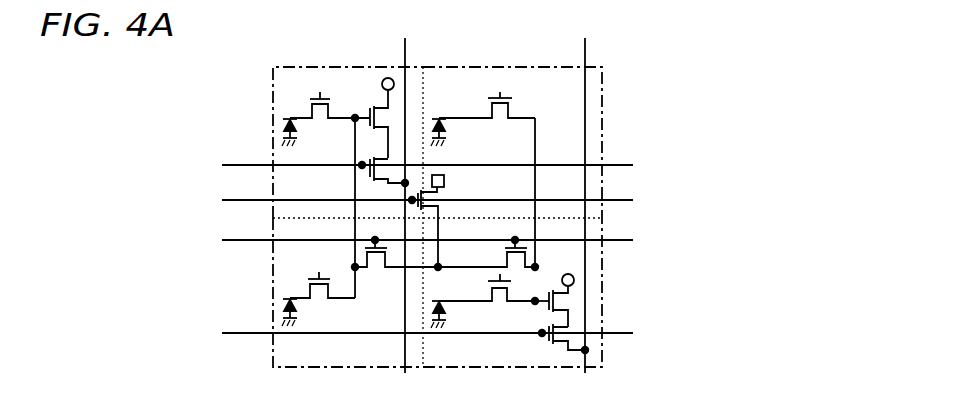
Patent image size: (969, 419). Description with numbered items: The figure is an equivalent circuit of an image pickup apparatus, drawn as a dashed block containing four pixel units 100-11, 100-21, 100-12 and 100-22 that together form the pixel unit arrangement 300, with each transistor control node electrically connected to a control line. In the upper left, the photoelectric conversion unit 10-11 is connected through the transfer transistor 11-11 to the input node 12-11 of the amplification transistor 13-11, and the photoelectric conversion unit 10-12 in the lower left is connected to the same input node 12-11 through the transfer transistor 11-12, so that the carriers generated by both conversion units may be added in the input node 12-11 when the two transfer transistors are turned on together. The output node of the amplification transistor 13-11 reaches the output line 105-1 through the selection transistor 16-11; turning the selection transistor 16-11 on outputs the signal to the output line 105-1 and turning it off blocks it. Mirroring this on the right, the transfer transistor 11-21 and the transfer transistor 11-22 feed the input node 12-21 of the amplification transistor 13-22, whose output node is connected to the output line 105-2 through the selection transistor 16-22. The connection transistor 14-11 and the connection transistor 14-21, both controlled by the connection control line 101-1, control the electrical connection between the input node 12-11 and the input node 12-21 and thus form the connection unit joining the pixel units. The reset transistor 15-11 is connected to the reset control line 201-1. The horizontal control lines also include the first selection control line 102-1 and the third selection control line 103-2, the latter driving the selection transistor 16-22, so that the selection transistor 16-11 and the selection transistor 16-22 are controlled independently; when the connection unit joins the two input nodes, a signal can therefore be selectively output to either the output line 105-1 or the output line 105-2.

The pixel unit 300 is at (205, 71).
The pixel unit 100-11 is at (312, 67).
The pixel unit 100-21 is at (512, 42).
The pixel unit 100-12 is at (330, 367).
The pixel unit 100-22 is at (457, 367).
The output line 105-1 is at (402, 195).
The output line 105-2 is at (578, 195).
The first selection control line 102-1 is at (365, 165).
The reset control line 201-1 is at (365, 200).
The connection control line 101-1 is at (365, 240).
The third selection control line 103-2 is at (365, 333).
The photoelectric conversion unit 10-11 is at (284, 126).
The photoelectric conversion unit 10-12 is at (445, 123).
The transfer transistor 11-11 is at (311, 112).
The transfer transistor 11-21 is at (491, 108).
The transfer transistor 11-12 is at (310, 292).
The transfer transistor 11-22 is at (491, 291).
The input node 12-11 is at (353, 113).
The input node 12-21 is at (545, 106).
The amplification transistor 13-11 is at (371, 126).
The amplification transistor 13-22 is at (548, 302).
The connection transistor 14-11 is at (345, 158).
The connection transistor 14-21 is at (506, 258).
The reset transistor 15-11 is at (445, 194).
The selection transistor 16-11 is at (371, 178).
The selection transistor 16-22 is at (562, 348).